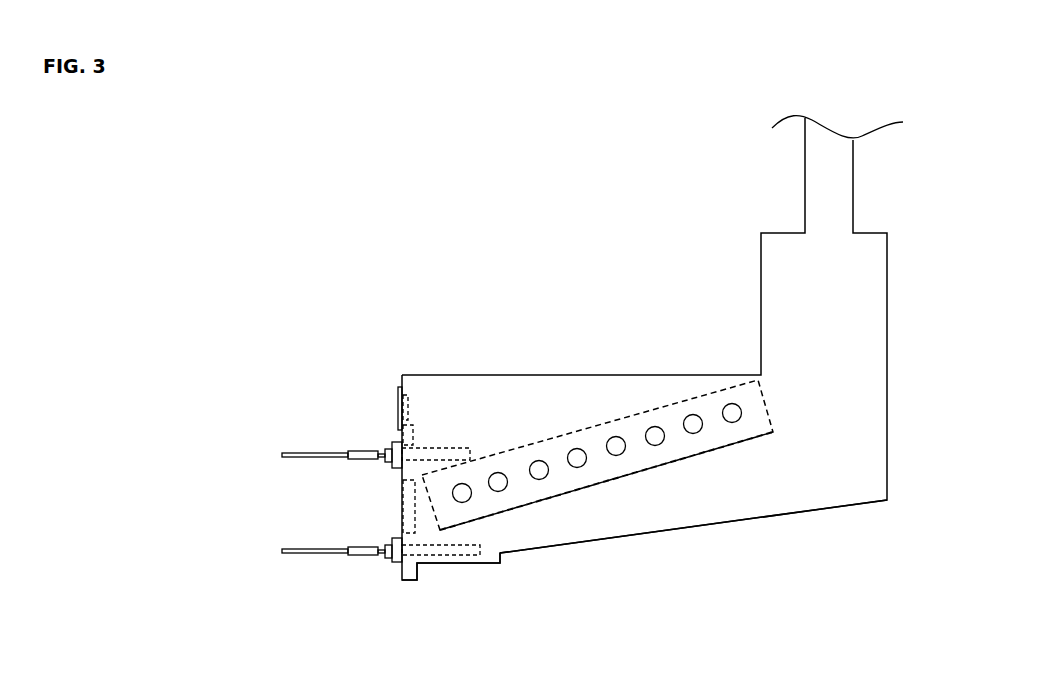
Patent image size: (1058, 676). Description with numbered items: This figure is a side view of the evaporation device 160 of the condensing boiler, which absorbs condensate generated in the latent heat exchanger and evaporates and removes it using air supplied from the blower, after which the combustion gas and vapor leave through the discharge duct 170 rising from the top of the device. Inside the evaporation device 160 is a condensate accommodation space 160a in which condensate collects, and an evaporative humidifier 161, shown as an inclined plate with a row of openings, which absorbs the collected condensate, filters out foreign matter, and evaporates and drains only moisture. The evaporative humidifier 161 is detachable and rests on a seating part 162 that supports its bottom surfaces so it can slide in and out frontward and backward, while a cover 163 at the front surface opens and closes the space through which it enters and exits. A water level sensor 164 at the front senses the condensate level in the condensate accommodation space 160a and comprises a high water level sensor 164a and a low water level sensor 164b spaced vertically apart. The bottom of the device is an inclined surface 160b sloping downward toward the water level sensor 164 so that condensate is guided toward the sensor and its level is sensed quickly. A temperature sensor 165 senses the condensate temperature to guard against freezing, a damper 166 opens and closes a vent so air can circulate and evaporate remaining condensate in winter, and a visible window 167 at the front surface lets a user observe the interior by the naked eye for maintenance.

The evaporation device 160 is at (530, 352).
The condensate accommodation space 160a is at (520, 533).
The inclined surface 160b is at (625, 532).
The evaporative humidifier 161 is at (600, 423).
The seating part 162 is at (672, 462).
The cover 163 is at (407, 507).
The water level sensor 164 is at (311, 502).
The high water level sensor 164a is at (310, 457).
The low water level sensor 164b is at (310, 549).
The temperature sensor 165 is at (408, 438).
The damper 166 is at (616, 446).
The visible window 167 is at (398, 408).
The discharge duct 170 is at (822, 173).